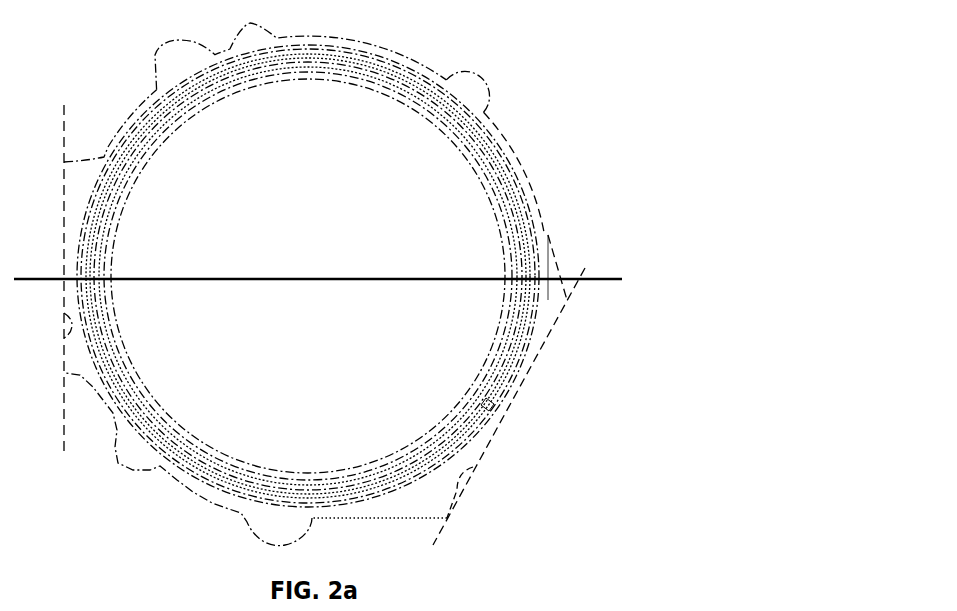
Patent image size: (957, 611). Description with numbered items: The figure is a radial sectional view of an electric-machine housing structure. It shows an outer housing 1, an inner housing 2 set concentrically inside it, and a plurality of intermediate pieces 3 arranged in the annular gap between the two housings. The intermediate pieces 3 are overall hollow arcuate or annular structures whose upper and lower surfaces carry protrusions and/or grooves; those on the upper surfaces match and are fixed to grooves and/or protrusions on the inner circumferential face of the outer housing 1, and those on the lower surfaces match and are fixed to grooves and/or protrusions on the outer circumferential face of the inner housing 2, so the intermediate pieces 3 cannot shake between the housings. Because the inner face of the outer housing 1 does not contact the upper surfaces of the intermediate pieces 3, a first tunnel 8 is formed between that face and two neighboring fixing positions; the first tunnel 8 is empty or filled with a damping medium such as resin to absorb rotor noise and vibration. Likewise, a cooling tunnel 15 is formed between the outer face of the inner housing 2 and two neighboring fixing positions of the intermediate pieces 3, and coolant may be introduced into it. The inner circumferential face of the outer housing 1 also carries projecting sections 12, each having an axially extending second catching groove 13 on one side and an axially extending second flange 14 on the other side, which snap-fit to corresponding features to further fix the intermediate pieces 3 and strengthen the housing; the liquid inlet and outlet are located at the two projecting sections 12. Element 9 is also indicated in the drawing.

The outer housing 1 is at (445, 88).
The inner housing 2 is at (445, 133).
The intermediate pieces 3 is at (493, 153).
The first tunnel 8 is at (178, 88).
The cage 9 is at (148, 118).
The projecting sections 12 is at (505, 388).
The second catching groove 13 is at (520, 355).
The second flange 14 is at (490, 403).
The cooling tunnel 15 is at (126, 165).